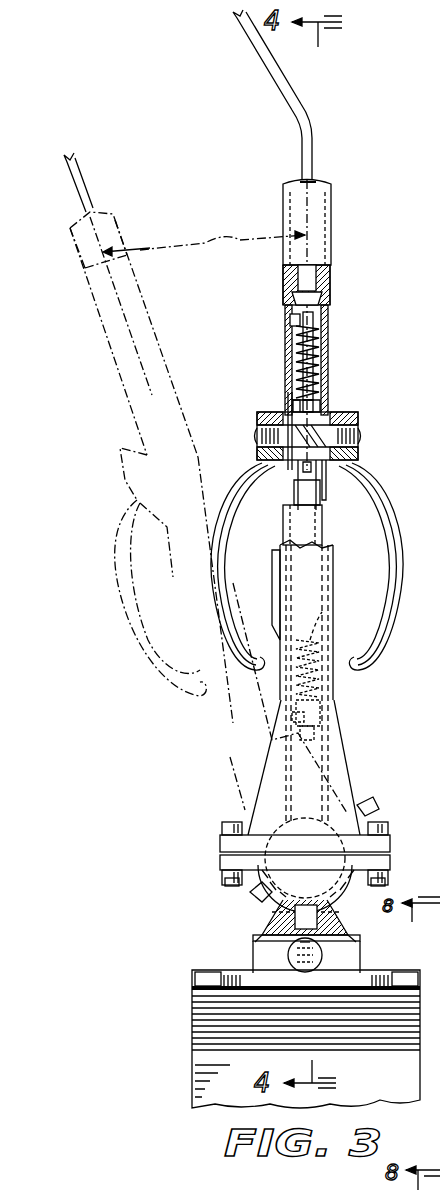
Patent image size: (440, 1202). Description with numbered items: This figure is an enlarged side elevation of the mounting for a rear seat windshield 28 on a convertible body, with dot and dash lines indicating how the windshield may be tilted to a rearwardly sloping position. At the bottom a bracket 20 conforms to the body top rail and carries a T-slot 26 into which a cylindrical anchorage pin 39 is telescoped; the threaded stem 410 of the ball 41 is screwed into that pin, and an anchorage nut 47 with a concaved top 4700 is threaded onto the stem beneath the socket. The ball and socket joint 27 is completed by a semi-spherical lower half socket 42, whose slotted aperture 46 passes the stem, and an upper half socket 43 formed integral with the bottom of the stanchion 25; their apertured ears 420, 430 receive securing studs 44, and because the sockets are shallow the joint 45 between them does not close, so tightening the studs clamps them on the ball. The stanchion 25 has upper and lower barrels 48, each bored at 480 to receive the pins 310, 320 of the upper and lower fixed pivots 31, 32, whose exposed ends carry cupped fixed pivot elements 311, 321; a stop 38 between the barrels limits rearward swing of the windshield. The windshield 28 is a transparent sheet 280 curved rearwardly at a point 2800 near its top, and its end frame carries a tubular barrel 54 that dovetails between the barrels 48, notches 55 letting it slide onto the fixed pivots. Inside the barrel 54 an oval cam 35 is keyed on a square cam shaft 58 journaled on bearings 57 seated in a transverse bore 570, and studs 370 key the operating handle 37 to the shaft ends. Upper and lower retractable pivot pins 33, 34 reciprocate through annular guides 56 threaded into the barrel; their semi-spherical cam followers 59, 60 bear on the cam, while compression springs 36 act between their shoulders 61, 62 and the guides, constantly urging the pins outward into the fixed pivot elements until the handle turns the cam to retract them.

The bracket 20 is at (200, 1040).
The stanchion 25 is at (342, 744).
The T-slot 26 is at (322, 960).
The ball and socket joint 27 is at (296, 800).
The windshield 28 is at (284, 78).
The transparent sheet 280 is at (312, 165).
The curved point 2800 is at (308, 128).
The upper fixed pivot 31 is at (331, 292).
The pin 310 is at (331, 276).
The cupped fixed pivot element 311 is at (331, 306).
The lower fixed pivot 32 is at (328, 720).
The pin 320 is at (270, 768).
The cupped fixed pivot element 321 is at (300, 757).
The upper retractable pivot pin 33 is at (303, 350).
The lower retractable pivot pin 34 is at (320, 592).
The oval cam 35 is at (320, 402).
The compression spring 36 is at (322, 360).
The operating handle 37 is at (400, 528).
The stud 370 is at (359, 436).
The stop 38 is at (272, 576).
The cylindrical anchorage pin 39 is at (305, 972).
The ball 41 is at (309, 935).
The threaded stem 410 is at (290, 924).
The lower half socket 42 is at (264, 900).
The apertured ear 420 is at (220, 862).
The upper half socket 43 is at (278, 824).
The apertured ear 430 is at (222, 830).
The securing stud 44 is at (225, 882).
The joint 45 is at (220, 843).
The slotted aperture 46 is at (285, 908).
The anchorage nut 47 is at (272, 936).
The concaved top 4700 is at (338, 926).
The barrel 48 is at (332, 206).
The bore 480 is at (284, 288).
The tubular barrel 54 is at (324, 532).
The notch 55 is at (290, 322).
The annular guide 56 is at (329, 336).
The bearing 57 is at (288, 412).
The transverse bore 570 is at (352, 420).
The square cam shaft 58 is at (298, 482).
The cam follower 59 is at (292, 392).
The cam follower 60 is at (298, 498).
The shoulder 61 is at (318, 390).
The shoulder 62 is at (316, 646).